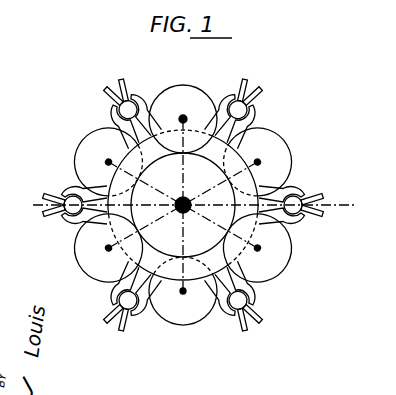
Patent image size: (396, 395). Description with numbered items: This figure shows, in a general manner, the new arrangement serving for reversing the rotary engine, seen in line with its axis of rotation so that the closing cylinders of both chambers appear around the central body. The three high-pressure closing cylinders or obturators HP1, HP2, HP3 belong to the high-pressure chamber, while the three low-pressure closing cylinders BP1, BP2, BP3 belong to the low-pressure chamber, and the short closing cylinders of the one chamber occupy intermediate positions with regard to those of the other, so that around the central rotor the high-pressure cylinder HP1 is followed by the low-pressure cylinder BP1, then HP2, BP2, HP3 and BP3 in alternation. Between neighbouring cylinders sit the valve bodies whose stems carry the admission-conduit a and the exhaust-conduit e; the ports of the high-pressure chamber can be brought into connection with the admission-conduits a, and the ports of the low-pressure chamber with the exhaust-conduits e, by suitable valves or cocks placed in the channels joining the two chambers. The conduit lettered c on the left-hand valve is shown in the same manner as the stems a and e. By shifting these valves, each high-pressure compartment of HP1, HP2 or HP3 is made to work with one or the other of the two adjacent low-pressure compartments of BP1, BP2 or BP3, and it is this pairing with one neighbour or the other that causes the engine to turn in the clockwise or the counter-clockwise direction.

The high-pressure cylinder HP1 is at (183, 119).
The high-pressure cylinder HP2 is at (258, 248).
The high-pressure cylinder HP3 is at (108, 248).
The low-pressure cylinder BP1 is at (258, 162).
The low-pressure cylinder BP2 is at (183, 291).
The low-pressure cylinder BP3 is at (108, 162).
The admission-conduit a is at (355, 207).
The exhaust-conduit e is at (216, 204).
The valve stem c is at (41, 191).